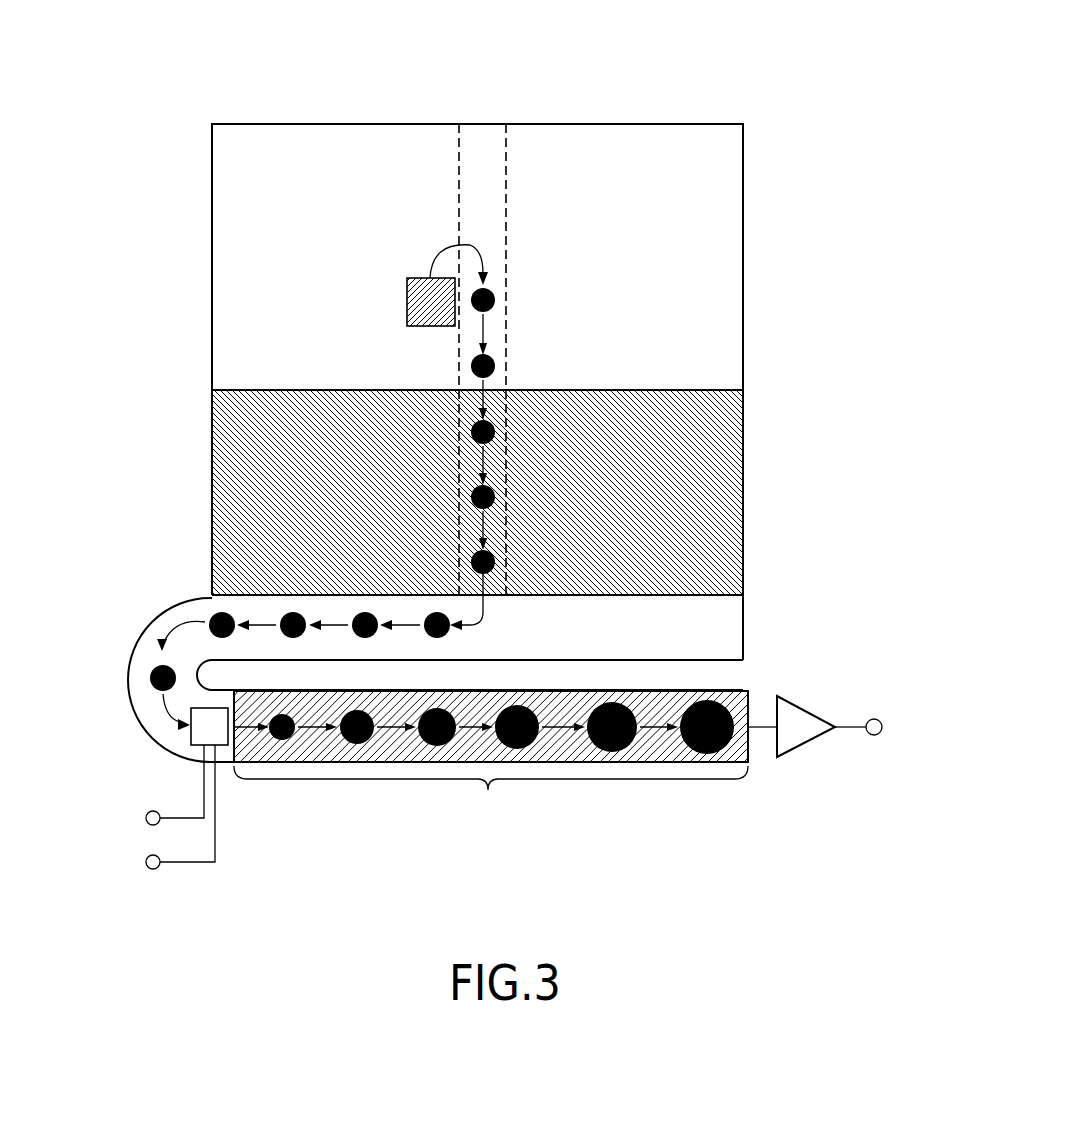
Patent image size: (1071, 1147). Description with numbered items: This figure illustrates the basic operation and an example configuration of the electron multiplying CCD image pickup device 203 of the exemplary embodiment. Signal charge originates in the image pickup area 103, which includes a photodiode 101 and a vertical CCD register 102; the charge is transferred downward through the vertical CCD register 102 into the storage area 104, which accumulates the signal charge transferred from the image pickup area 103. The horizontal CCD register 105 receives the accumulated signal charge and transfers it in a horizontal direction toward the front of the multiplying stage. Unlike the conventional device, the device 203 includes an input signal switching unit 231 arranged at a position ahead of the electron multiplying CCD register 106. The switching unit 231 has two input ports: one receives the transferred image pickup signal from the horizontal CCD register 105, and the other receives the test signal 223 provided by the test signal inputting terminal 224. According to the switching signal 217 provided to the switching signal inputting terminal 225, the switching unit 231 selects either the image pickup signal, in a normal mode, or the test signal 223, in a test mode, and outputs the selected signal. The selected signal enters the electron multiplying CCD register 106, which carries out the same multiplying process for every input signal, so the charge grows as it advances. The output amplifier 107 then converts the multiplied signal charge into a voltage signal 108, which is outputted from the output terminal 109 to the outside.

The electron multiplying CCD image pickup device 203 is at (742, 65).
The photodiode 101 is at (407, 308).
The vertical CCD register 102 is at (483, 147).
The image pickup area 103 is at (743, 152).
The storage area 104 is at (743, 417).
The horizontal CCD register 105 is at (743, 620).
The electron multiplying CCD register 106 is at (491, 756).
The output amplifier 107 is at (800, 698).
The voltage signal 108 is at (848, 728).
The output terminal 109 is at (880, 712).
The input signal switching unit 231 is at (191, 733).
The switching signal 217 is at (204, 808).
The test signal 223 is at (215, 848).
The test signal inputting terminal 224 is at (146, 864).
The switching signal inputting terminal 225 is at (146, 820).